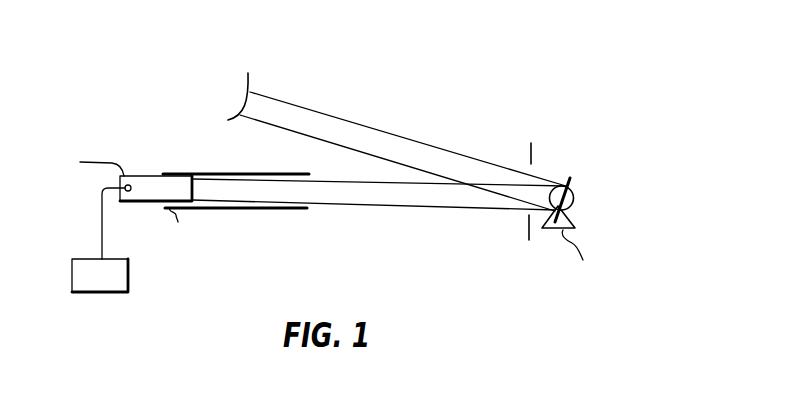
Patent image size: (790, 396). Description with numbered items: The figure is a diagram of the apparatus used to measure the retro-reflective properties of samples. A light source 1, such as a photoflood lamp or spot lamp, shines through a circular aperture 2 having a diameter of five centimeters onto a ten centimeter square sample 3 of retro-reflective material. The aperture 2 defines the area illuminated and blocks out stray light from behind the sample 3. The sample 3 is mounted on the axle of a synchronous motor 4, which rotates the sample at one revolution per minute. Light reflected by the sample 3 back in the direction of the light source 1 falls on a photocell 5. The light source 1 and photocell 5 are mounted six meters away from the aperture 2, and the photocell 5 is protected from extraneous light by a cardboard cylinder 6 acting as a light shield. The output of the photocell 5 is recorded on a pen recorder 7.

The light source 1 is at (250, 88).
The aperture 2 is at (531, 162).
The sample 3 is at (575, 187).
The synchronous motor 4 is at (577, 223).
The photocell 5 is at (147, 193).
The cardboard cylinder 6 is at (252, 173).
The pen recorder 7 is at (128, 284).